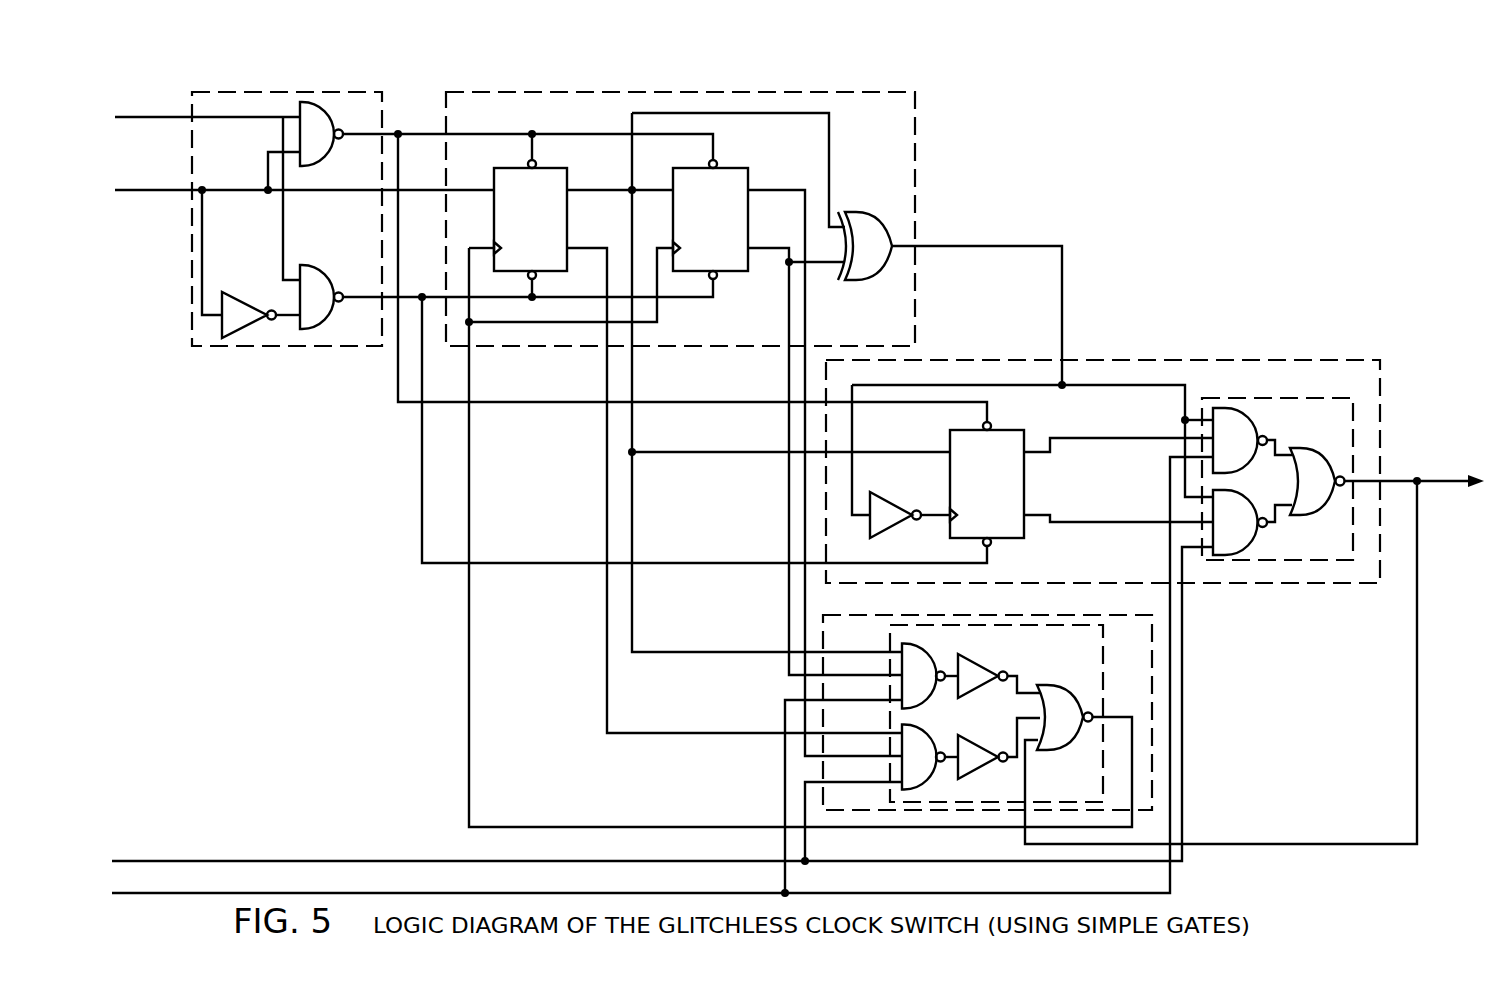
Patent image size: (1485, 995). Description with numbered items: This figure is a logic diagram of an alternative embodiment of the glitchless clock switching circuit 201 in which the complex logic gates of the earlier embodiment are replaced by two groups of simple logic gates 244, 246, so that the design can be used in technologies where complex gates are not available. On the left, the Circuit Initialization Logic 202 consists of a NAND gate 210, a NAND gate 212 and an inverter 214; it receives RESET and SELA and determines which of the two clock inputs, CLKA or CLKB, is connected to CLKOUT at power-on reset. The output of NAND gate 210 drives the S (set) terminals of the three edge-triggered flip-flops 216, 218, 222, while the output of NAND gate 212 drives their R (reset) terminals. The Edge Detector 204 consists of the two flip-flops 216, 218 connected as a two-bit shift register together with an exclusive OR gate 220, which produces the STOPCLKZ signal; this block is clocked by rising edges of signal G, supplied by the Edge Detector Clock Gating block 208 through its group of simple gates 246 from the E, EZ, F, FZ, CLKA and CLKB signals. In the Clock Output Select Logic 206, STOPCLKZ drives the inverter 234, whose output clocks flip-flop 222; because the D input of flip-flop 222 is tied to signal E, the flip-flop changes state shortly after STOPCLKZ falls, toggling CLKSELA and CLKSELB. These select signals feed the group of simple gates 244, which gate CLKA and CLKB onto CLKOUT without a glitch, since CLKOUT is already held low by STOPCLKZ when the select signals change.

The glitchless clock switch logic 201 is at (1178, 167).
The Circuit Initialization Logic 202 is at (376, 112).
The Edge Detector 204 is at (901, 117).
The Clock Output Select Logic 206 is at (1356, 389).
The Edge Detector Clock Gating block 208 is at (1153, 646).
The NAND gate 210 is at (310, 155).
The NAND gate 212 is at (322, 290).
The inverter 214 is at (243, 302).
The flip-flop 216 is at (515, 170).
The flip-flop 218 is at (700, 170).
The exclusive OR gate 220 is at (872, 225).
The flip-flop 222 is at (1000, 428).
The inverter 234 is at (880, 528).
The group of simple logic gates 244 is at (1300, 548).
The group of simple logic gates 246 is at (893, 626).